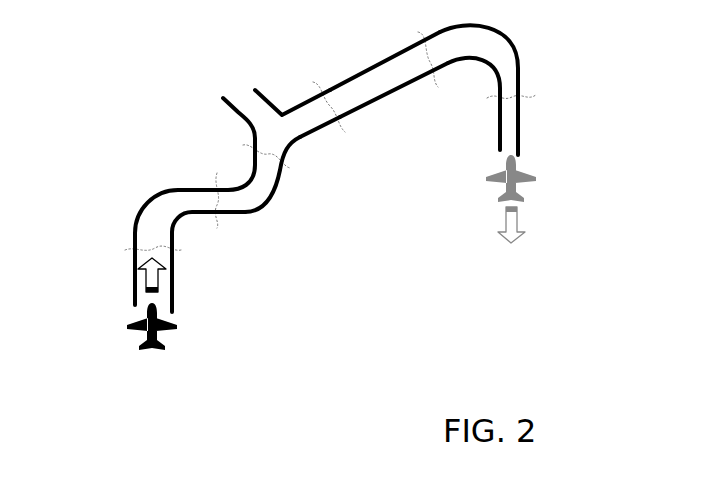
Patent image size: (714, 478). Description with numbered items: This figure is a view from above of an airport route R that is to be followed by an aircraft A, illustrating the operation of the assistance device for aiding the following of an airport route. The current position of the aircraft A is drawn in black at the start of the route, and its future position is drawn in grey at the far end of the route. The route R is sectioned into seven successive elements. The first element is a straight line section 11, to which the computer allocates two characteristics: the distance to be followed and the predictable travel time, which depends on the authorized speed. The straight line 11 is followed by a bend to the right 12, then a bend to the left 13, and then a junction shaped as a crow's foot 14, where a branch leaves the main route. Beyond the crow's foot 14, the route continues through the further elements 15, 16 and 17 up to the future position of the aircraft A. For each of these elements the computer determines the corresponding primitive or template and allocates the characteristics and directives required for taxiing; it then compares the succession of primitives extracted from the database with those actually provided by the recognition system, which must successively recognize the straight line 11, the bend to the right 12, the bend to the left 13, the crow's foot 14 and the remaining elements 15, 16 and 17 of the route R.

The airport route R is at (187, 59).
The straight line section 11 is at (137, 278).
The bend to the right 12 is at (167, 210).
The bend to the left 13 is at (255, 192).
The crow's foot 14 is at (290, 130).
The route element 15 is at (382, 77).
The route element 16 is at (505, 59).
The route element 17 is at (515, 123).
The aircraft A is at (140, 335).